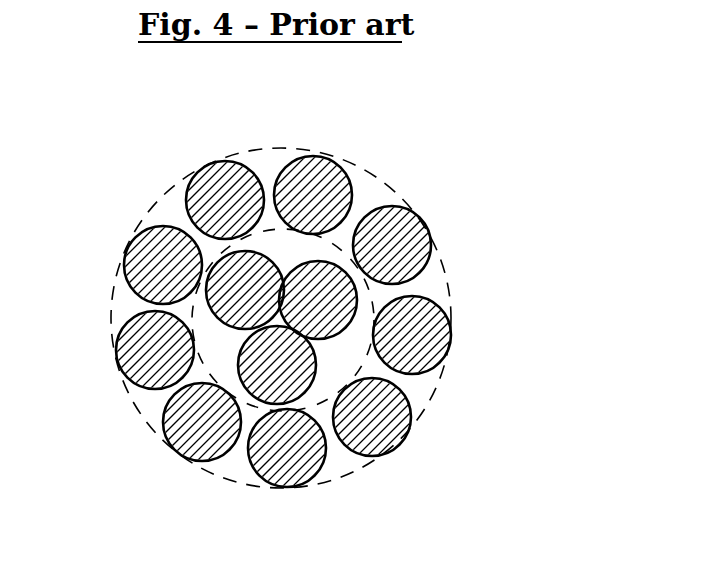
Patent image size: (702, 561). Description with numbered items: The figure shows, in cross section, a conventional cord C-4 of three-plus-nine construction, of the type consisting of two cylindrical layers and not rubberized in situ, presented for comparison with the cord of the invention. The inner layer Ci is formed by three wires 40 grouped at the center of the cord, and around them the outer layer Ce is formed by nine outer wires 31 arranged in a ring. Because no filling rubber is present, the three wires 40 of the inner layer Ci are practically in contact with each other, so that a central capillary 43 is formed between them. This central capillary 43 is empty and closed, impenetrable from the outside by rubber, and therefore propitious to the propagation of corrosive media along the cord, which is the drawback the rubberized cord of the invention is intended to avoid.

The conventional 3+9 cord C-4 is at (334, 142).
The outer layer Ce is at (176, 216).
The inner layer Ci is at (222, 355).
The outer wire 31 is at (150, 350).
The central capillary 43 is at (284, 319).
The inner layer wire 40 is at (305, 412).